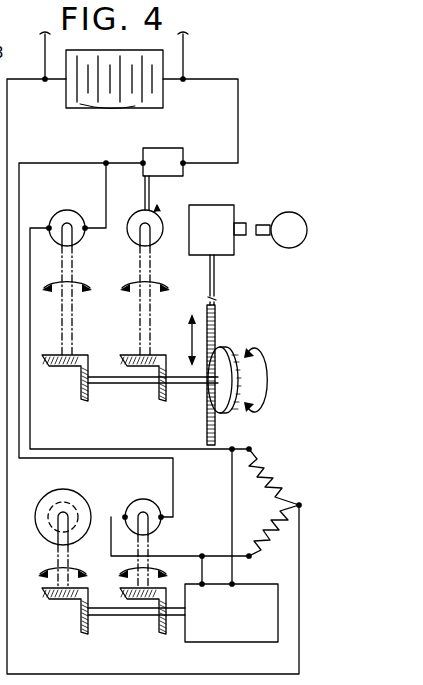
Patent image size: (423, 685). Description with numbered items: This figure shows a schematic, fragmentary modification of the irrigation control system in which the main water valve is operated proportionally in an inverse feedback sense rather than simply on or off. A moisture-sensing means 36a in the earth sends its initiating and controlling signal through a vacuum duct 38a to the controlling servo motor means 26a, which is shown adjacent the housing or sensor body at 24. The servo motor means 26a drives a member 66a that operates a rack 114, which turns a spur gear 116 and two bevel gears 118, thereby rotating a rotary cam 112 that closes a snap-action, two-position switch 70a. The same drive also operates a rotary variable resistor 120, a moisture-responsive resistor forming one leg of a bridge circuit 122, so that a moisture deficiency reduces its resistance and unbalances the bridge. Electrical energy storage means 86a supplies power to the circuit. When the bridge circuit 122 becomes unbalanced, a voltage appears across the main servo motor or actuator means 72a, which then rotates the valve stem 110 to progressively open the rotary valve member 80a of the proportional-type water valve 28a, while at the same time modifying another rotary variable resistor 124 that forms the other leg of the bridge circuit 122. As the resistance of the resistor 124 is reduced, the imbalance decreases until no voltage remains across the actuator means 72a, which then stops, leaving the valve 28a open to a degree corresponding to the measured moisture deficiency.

The housing 24 is at (246, 0).
The servo motor means 26a is at (244, 258).
The valve 28a is at (28, 510).
The moisture-sensing means 36a is at (293, 205).
The vacuum duct 38a is at (243, 222).
The member 66a is at (216, 273).
The snap-action, two-position switch 70a is at (176, 144).
The main servo motor or actuator means 72a is at (210, 652).
The valve member 80a is at (77, 505).
The electrical energy storage means 86a is at (50, 98).
The valve stem 110 is at (57, 523).
The rotary cam 112 is at (128, 239).
The rack 114 is at (216, 431).
The spur gear 116 is at (232, 350).
The bevel gears 118 is at (168, 357).
The rotary variable resistor 120 is at (58, 211).
The bridge circuit 122 is at (258, 485).
The rotary variable resistor 124 is at (163, 534).